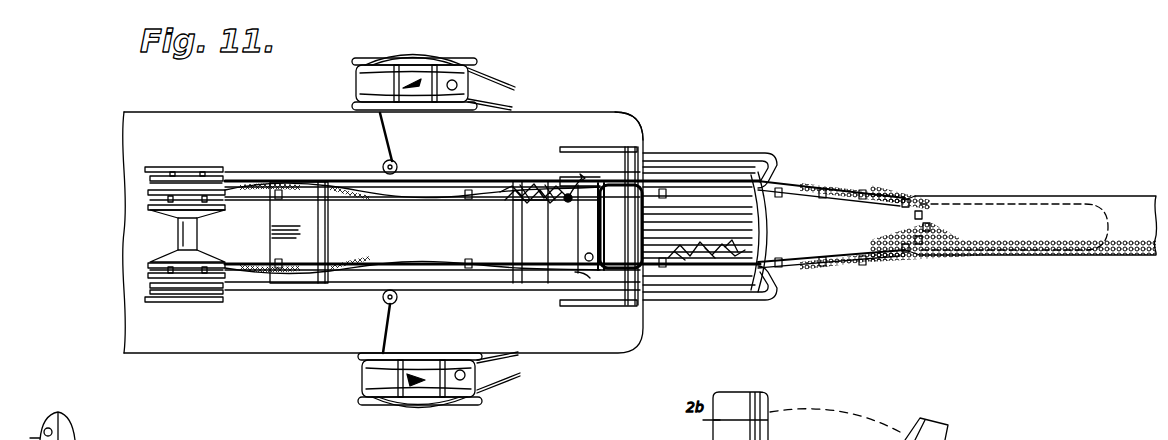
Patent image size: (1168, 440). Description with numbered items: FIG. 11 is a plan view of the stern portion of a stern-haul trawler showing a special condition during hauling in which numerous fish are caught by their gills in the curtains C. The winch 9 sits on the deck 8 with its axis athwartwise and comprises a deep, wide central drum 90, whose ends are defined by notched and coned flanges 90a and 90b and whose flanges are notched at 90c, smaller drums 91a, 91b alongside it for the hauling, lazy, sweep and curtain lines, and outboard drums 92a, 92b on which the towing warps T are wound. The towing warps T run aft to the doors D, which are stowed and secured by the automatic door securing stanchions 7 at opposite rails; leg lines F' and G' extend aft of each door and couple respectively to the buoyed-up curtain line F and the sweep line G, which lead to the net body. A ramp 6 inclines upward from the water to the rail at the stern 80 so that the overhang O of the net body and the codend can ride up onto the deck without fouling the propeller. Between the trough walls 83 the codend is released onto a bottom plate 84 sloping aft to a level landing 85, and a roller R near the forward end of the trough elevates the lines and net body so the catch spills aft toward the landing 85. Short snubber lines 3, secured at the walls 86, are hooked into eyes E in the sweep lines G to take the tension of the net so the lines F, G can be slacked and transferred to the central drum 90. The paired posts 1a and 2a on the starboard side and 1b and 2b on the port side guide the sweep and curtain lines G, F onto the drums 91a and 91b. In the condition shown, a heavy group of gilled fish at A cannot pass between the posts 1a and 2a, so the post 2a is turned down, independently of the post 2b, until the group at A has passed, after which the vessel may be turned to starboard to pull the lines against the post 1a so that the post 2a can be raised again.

The deck 8 is at (497, 146).
The automatic door securing stanchions 7 is at (438, 228).
The doors D is at (428, 50).
The leg line F' is at (509, 75).
The leg line G' is at (512, 97).
The towing warps T is at (397, 150).
The winch 9 is at (171, 240).
The additional drum 92a is at (148, 170).
The additional drum 92b is at (150, 292).
The smaller drum 91a is at (148, 195).
The smaller drum 91b is at (148, 268).
The central drum 90 is at (178, 236).
The notched and coned flange 90a is at (212, 211).
The notched and coned flange 90b is at (212, 258).
The notch 90c is at (196, 230).
The roller R is at (323, 214).
The curtains C is at (300, 188).
The curtain line F is at (427, 209).
The sweep line G is at (377, 247).
The bottom plate 84 is at (427, 245).
The landing 85 is at (537, 254).
The walls 83 is at (454, 180).
The group of gilled fish A is at (524, 212).
The walls 86 is at (592, 299).
The snubber lines 3 is at (575, 272).
The post 1a is at (616, 182).
The post 1b is at (610, 283).
The post 2a is at (601, 222).
The post 2b is at (590, 256).
The stern 80 is at (643, 131).
The ramp 6 is at (715, 150).
The eyes E is at (815, 253).
The overhang of the net body O is at (1025, 236).